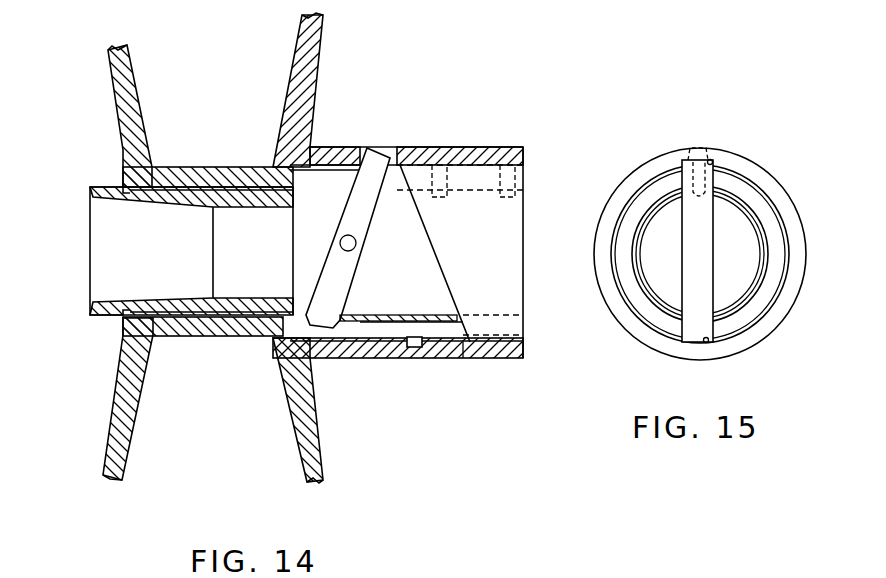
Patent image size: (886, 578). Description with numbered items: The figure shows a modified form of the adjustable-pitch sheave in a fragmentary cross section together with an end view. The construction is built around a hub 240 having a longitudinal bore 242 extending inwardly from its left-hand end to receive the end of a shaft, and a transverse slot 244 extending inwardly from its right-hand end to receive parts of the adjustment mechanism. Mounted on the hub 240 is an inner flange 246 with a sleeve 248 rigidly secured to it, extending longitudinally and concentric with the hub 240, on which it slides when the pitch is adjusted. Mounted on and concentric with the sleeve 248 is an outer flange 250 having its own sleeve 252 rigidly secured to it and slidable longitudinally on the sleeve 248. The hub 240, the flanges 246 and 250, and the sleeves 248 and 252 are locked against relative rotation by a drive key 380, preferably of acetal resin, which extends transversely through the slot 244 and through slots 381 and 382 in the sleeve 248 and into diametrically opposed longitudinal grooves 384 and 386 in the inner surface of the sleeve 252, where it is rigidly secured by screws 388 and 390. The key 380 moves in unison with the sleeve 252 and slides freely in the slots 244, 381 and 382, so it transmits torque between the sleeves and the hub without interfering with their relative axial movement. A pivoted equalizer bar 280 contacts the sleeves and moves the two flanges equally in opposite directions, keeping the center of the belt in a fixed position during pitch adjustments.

In FIG. 14, the hub 240 is at (262, 336).
In FIG. 15, the hub 240 is at (672, 298).
In FIG. 14, the longitudinal bore 242 is at (92, 306).
In FIG. 14, the transverse slot 244 is at (303, 262).
In FIG. 14, the inner flange 246 is at (133, 100).
In FIG. 14, the sleeve 248 is at (208, 337).
In FIG. 15, the sleeve 248 is at (627, 257).
In FIG. 14, the outer flange 250 is at (297, 82).
In FIG. 14, the sleeve 252 is at (330, 147).
In FIG. 15, the sleeve 252 is at (773, 192).
In FIG. 14, the equalizer bar 280 is at (340, 277).
In FIG. 14, the drive key 380 is at (489, 254).
In FIG. 15, the drive key 380 is at (697, 253).
In FIG. 14, the slot 381 is at (394, 178).
In FIG. 14, the slot 382 is at (368, 328).
In FIG. 14, the longitudinal groove 384 is at (525, 150).
In FIG. 15, the longitudinal groove 384 is at (712, 161).
In FIG. 14, the longitudinal groove 386 is at (465, 342).
In FIG. 15, the longitudinal groove 386 is at (707, 343).
In FIG. 14, the screw 388 is at (437, 197).
In FIG. 14, the screw 390 is at (492, 197).
In FIG. 15, the screw 390 is at (698, 147).